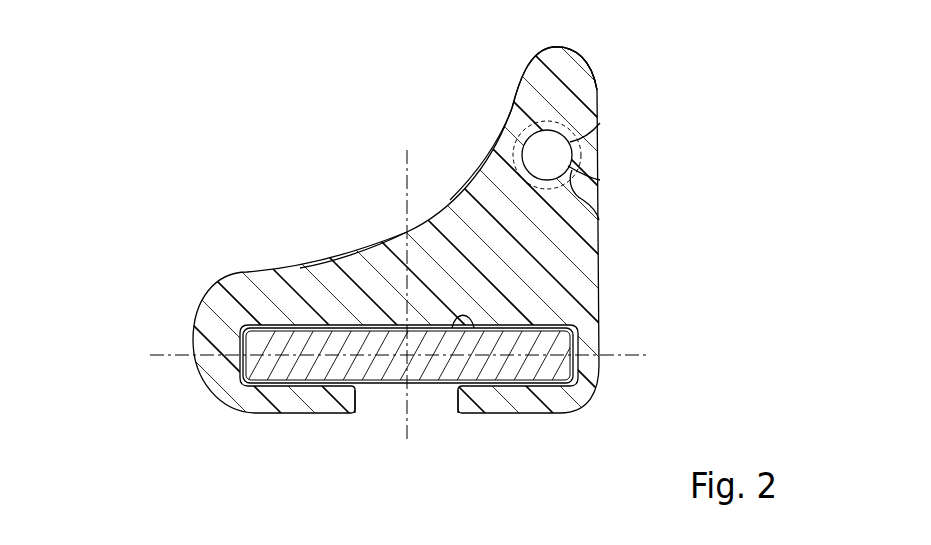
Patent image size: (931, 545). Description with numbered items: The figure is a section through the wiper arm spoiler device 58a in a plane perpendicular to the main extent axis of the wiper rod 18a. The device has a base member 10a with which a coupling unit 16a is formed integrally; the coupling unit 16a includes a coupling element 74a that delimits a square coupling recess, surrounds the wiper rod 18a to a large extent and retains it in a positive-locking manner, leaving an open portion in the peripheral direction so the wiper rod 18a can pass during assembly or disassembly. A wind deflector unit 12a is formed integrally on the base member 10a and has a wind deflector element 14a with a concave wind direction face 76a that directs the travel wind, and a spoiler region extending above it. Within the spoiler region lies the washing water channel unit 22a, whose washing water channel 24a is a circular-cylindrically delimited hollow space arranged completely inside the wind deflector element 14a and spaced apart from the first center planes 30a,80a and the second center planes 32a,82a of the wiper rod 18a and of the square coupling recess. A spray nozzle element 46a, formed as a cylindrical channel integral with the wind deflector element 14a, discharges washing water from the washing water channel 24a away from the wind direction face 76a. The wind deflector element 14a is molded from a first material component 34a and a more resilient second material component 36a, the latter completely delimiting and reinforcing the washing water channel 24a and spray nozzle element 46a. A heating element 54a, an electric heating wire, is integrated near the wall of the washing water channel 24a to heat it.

The base member 10a is at (217, 293).
The wind deflector unit 12a is at (474, 102).
The wind deflector element 14a is at (593, 93).
The coupling unit 16a is at (382, 420).
The wiper rod 18a is at (554, 373).
The washing water channel unit 22a is at (600, 209).
The washing water channel 24a is at (572, 126).
The first center planes 30a,80a is at (407, 165).
The second center planes 32a,82a is at (178, 358).
The first material component 34a is at (588, 138).
The second material component 36a is at (594, 90).
The spray nozzle element 46a is at (578, 164).
The heating element 54a is at (532, 132).
The wiper arm spoiler device 58a is at (270, 209).
The coupling element 74a is at (470, 332).
The wind direction face 76a is at (368, 243).